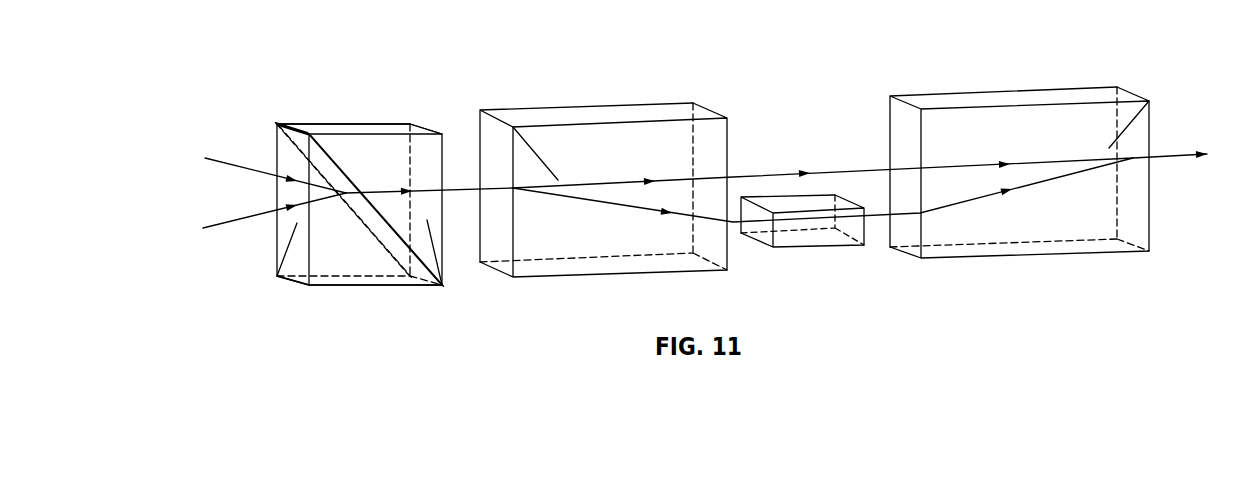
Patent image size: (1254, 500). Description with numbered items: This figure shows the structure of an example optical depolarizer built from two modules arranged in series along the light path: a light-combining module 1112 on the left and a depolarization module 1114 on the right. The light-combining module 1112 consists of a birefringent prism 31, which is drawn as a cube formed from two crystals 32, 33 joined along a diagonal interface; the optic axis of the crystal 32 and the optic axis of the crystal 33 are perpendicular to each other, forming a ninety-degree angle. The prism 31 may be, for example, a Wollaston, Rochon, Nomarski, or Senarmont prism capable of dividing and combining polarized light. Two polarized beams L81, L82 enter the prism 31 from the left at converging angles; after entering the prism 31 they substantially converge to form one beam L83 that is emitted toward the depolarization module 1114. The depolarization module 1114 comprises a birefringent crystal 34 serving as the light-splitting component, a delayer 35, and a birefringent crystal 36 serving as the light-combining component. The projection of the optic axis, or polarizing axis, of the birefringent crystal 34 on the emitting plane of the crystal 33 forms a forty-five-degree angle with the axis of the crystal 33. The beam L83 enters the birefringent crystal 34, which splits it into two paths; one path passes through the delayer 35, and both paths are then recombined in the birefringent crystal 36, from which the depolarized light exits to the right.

The light-combining module 1112 is at (350, 47).
The depolarization module 1114 is at (802, 82).
The birefringent prism 31 is at (348, 117).
The crystal 32 is at (347, 280).
The crystal 33 is at (397, 128).
The birefringent crystal 34 is at (612, 265).
The delayer 35 is at (818, 237).
The birefringent crystal 36 is at (1028, 248).
The beam L81 is at (238, 163).
The beam L82 is at (242, 222).
The beam L83 is at (385, 187).